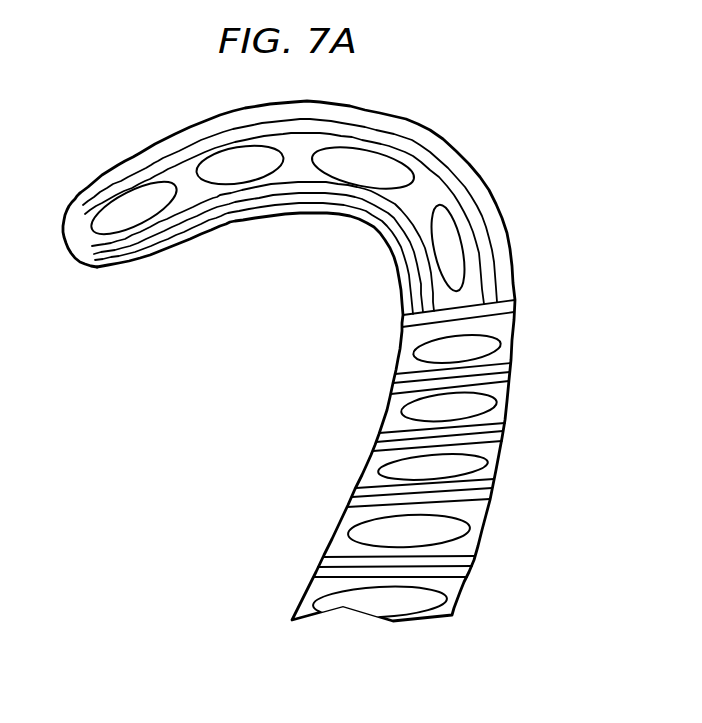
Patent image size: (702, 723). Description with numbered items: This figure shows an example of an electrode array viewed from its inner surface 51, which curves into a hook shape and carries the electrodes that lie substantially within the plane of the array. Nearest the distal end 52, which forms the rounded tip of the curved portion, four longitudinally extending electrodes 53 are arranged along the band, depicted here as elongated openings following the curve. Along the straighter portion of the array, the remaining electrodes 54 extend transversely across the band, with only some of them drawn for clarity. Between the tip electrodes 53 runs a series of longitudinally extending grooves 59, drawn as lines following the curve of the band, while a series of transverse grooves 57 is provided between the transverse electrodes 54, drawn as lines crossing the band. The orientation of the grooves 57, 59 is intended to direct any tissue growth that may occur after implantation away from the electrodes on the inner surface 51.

The inner surface 51 is at (481, 258).
The distal end 52 is at (84, 260).
The longitudinally extending electrodes 53 is at (217, 162).
The transverse electrodes 54 is at (498, 405).
The transverse grooves 57 is at (364, 500).
The longitudinally extending grooves 59 is at (289, 185).